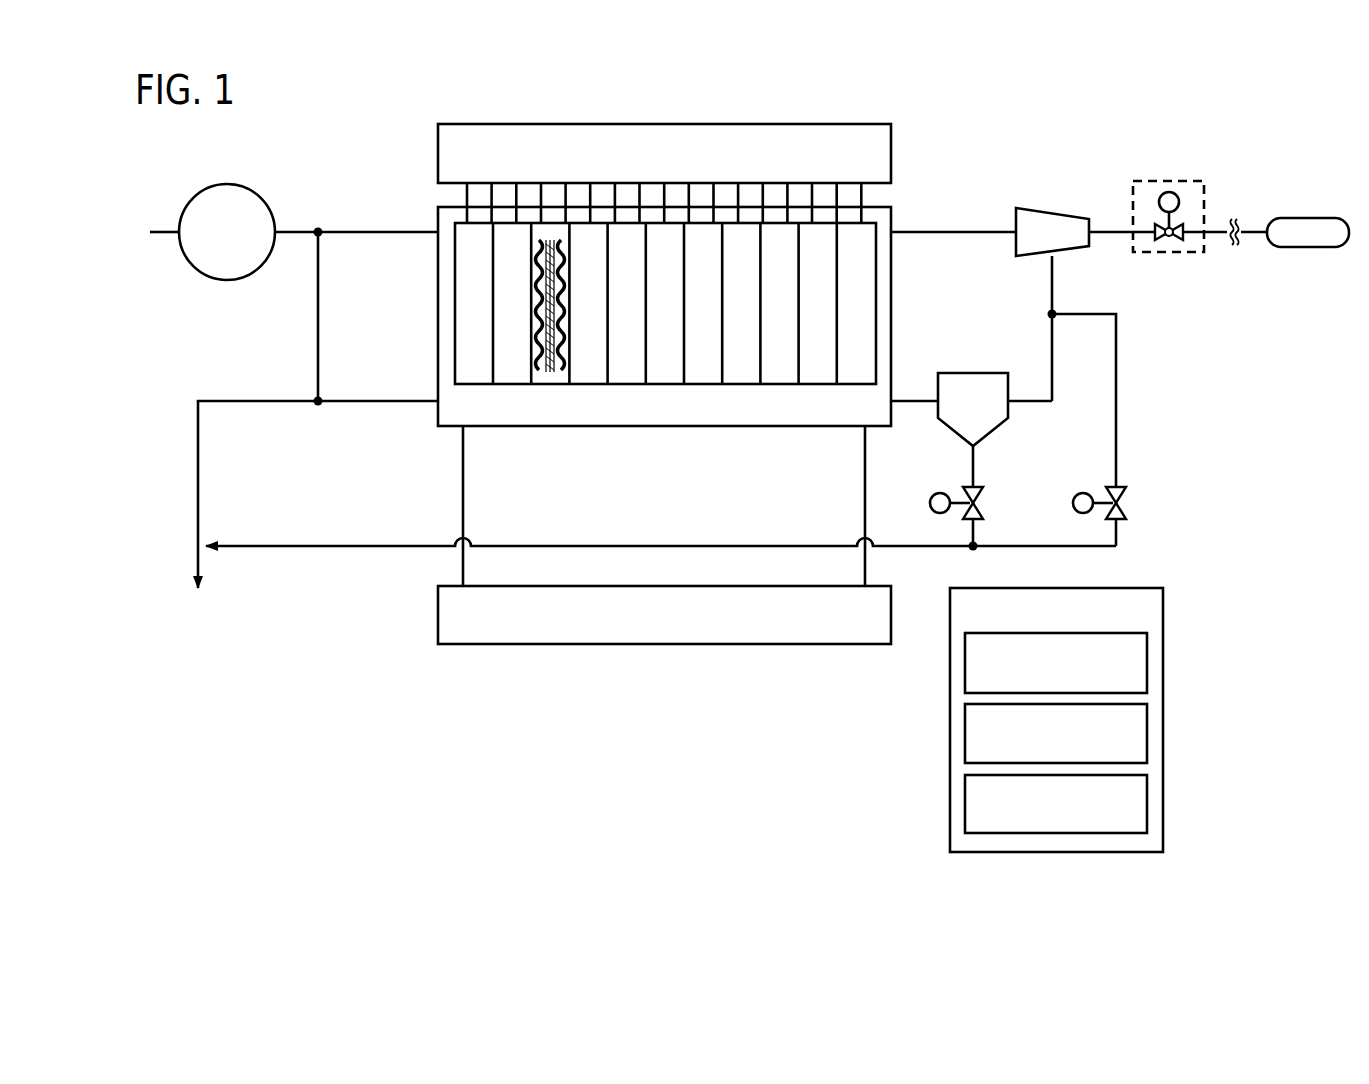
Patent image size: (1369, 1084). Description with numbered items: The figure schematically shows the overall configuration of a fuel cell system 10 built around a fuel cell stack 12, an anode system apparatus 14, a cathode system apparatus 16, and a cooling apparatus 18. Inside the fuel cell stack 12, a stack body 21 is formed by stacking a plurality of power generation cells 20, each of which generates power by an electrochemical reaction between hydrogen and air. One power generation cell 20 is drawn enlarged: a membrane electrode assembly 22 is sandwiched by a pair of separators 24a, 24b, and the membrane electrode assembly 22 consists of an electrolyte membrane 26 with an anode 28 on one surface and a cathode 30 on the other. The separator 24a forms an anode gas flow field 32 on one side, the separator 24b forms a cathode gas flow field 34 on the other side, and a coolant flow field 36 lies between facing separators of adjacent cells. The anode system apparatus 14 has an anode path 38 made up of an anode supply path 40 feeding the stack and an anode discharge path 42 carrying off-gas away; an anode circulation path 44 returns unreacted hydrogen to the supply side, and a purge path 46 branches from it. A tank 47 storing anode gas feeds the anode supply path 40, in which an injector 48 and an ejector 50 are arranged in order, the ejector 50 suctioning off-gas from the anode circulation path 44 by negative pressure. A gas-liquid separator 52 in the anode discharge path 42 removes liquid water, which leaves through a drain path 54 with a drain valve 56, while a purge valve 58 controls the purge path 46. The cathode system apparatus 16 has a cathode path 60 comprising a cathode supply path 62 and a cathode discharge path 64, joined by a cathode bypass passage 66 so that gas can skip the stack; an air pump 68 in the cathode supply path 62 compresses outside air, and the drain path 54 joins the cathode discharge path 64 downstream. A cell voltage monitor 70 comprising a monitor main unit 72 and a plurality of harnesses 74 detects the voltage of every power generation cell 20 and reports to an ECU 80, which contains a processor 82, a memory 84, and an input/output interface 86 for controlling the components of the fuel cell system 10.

The fuel cell system 10 is at (341, 106).
The fuel cell stack 12 is at (671, 431).
The anode system apparatus 14 is at (1112, 146).
The cathode system apparatus 16 is at (177, 195).
The cooling apparatus 18 is at (600, 647).
The power generation cell 20 is at (780, 373).
The stack body 21 is at (879, 276).
The membrane electrode assembly 22 is at (548, 374).
The separator 24a is at (565, 281).
The separator 24b is at (535, 281).
The electrolyte membrane 26 is at (549, 378).
The anode 28 is at (557, 378).
The cathode 30 is at (541, 378).
The anode gas flow field 32 is at (560, 308).
The cathode gas flow field 34 is at (540, 308).
The coolant flow field 36 is at (540, 357).
The anode path 38 is at (973, 226).
The anode supply path 40 is at (930, 228).
The anode discharge path 42 is at (911, 398).
The anode circulation path 44 is at (1052, 282).
The purge path 46 is at (1116, 372).
The tank 47 is at (1303, 218).
The injector 48 is at (1169, 191).
The ejector 50 is at (1040, 207).
The gas-liquid separator 52 is at (965, 373).
The drain path 54 is at (975, 461).
The drain valve 56 is at (983, 498).
The purge valve 58 is at (1126, 498).
The cathode path 60 is at (317, 224).
The cathode supply path 62 is at (390, 236).
The cathode discharge path 64 is at (381, 403).
The cathode bypass passage 66 is at (318, 328).
The air pump 68 is at (228, 184).
The cell voltage monitor 70 is at (378, 132).
The monitor main unit 72 is at (438, 150).
The harness 74 is at (450, 195).
The ECU 80 is at (1187, 604).
The processor 82 is at (1147, 662).
The memory 84 is at (1147, 731).
The input/output interface 86 is at (1147, 802).